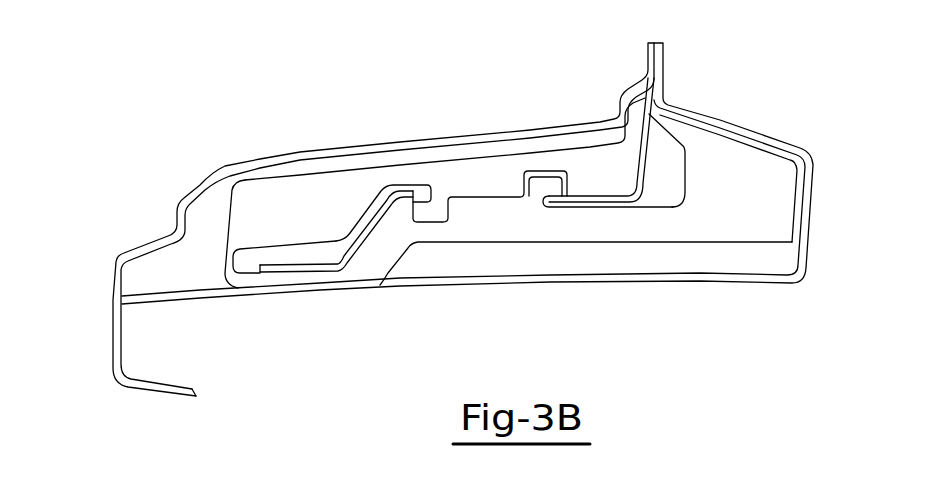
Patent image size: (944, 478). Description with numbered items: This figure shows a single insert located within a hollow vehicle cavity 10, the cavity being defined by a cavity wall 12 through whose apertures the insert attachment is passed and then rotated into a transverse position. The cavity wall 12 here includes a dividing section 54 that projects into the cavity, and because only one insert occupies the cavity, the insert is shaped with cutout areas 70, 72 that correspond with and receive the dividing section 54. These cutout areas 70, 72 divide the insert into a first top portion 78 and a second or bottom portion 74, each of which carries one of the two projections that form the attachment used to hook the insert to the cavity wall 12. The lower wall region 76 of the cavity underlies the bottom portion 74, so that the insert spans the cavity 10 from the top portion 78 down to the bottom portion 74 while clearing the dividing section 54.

The vehicle cavity 10 is at (175, 253).
The cavity wall 12 is at (407, 143).
The dividing section 54 is at (385, 196).
The cutout area 70 is at (665, 189).
The cutout area 72 is at (305, 252).
The bottom portion 74 is at (762, 225).
The bottom wall 76 is at (552, 272).
The top portion 78 is at (472, 172).